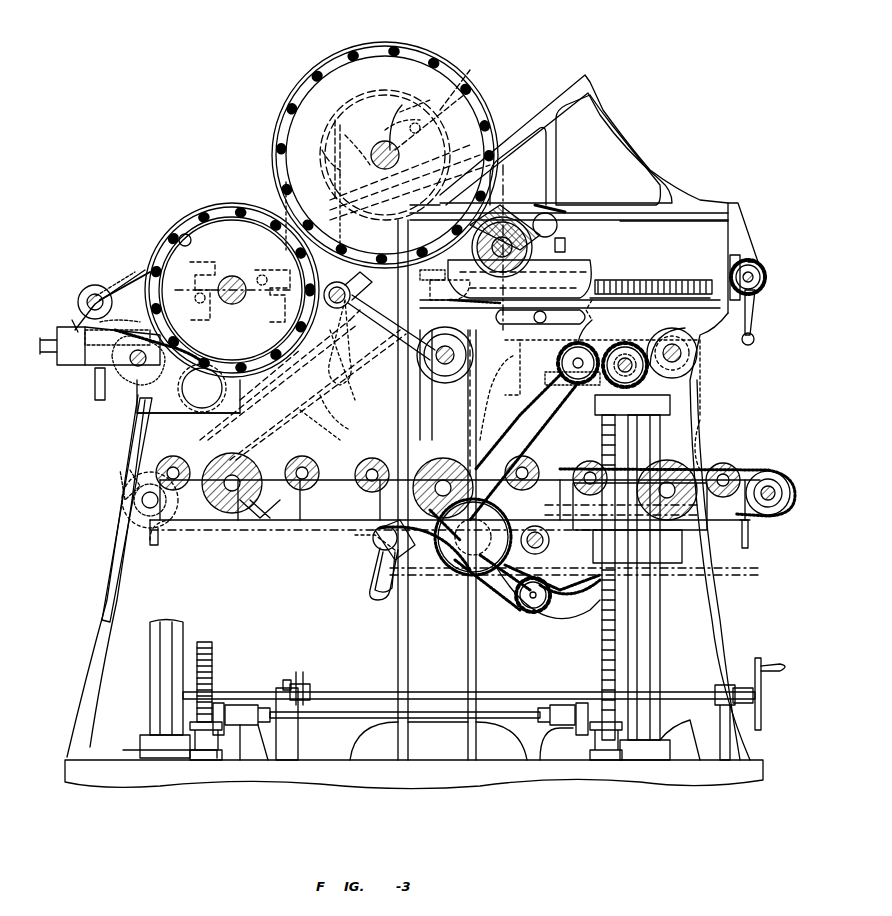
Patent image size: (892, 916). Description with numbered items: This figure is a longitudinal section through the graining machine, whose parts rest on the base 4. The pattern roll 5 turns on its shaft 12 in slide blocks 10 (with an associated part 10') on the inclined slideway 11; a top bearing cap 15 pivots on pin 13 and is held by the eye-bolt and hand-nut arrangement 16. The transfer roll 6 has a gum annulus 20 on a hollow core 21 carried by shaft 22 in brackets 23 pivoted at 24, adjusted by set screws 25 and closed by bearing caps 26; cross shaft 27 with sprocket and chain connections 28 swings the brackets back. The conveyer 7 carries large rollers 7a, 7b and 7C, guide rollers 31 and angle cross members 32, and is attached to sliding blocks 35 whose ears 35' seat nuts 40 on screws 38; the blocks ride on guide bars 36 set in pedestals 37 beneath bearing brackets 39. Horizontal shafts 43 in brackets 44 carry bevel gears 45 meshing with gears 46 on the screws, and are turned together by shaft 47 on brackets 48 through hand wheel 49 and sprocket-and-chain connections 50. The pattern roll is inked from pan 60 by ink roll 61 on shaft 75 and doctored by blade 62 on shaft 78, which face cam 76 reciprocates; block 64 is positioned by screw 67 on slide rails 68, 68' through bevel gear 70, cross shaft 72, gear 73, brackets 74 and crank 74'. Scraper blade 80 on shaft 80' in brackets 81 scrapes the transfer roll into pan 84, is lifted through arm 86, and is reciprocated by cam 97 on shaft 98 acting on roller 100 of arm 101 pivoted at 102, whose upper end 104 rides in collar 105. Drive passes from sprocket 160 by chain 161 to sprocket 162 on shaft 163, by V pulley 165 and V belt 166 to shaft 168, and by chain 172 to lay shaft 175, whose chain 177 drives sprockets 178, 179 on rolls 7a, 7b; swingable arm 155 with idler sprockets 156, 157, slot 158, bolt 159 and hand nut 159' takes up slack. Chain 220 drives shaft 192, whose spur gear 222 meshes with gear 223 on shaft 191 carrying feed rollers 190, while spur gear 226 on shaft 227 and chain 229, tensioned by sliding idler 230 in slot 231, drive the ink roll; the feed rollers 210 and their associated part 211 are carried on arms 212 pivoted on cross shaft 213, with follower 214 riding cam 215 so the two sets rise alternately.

The base 4 is at (503, 165).
The pattern roll 5 is at (330, 56).
The transfer roll 6 is at (206, 208).
The conveyer 7 is at (352, 475).
The large conveyer roller 7a is at (672, 468).
The large conveyer roller 7b is at (440, 462).
The platen or backing roll 7C is at (240, 458).
The slide block 10 is at (428, 120).
The cylinder segment 10' is at (460, 81).
The inclined slideway 11 is at (534, 114).
The pattern roll shaft 12 is at (400, 105).
The pivot pin 13 is at (420, 112).
The top bearing member or cap 15 is at (382, 128).
The swingable eye-bolt and hand nut clamping arrangement 16 is at (296, 92).
The annulus of gum material 20 is at (228, 205).
The cylindrical hollow core 21 is at (180, 232).
The transfer roll shaft 22 is at (234, 272).
The movable bracket 23 is at (200, 312).
The pivot 24 is at (202, 388).
The set screw 25 is at (268, 275).
The pivoted bearing cap member 26 is at (248, 268).
The cross shaft 27 is at (145, 370).
The sprocket and chain connections 28 is at (172, 395).
The small roller 31 is at (176, 457).
The angle section cross member 32 is at (152, 545).
The sliding block 35 is at (647, 577).
The ear 35' is at (636, 522).
The upright guide bar 36 is at (660, 603).
The pedestal member 37 is at (680, 728).
The upright screw 38 is at (212, 646).
The overhanging bearing bracket 39 is at (632, 405).
The threaded nut 40 is at (588, 560).
The horizontal shaft 43 is at (350, 760).
The bracket 44 is at (250, 692).
The beveled gear 45 is at (222, 710).
The bevel gear 46 is at (212, 738).
The longitudinally extending shaft 47 is at (362, 693).
The bracket 48 is at (283, 670).
The hand wheel 49 is at (765, 658).
The sprocket and chain connections 50 is at (296, 672).
The ink pan 60 is at (560, 262).
The ink conveyer roll 61 is at (462, 290).
The doctor blade 62 is at (502, 205).
The slide block 64 is at (445, 220).
The screw 67 is at (640, 270).
The slide rail member 68 is at (650, 271).
The slide rail 68' is at (674, 223).
The beveled gear 70 is at (752, 310).
The cross shaft 72 is at (758, 272).
The bevel gear 73 is at (752, 292).
The bracket 74 is at (756, 232).
The crank 74' is at (764, 330).
The ink roll shaft 75 is at (462, 295).
The face cam 76 is at (560, 250).
The supporting shaft 78 is at (556, 215).
The scraper blade 80 is at (125, 262).
The shaft 80' is at (115, 270).
The bracket 81 is at (80, 300).
The receiving tray or pan 84 is at (95, 360).
The arm 86 is at (112, 322).
The cam 97 is at (178, 530).
The shaft 98 is at (135, 505).
The roller 100 is at (130, 482).
The arm 101 is at (108, 417).
The pivot 102 is at (95, 378).
The upper end of arm 104 is at (72, 320).
The collar 105 is at (80, 288).
The swingable arm 155 is at (522, 600).
The idler sprocket 156 is at (528, 550).
The idler sprocket 157 is at (530, 612).
The arcuate slot 158 is at (400, 570).
The clamping bolt 159 is at (358, 563).
The hand nut 159' is at (356, 550).
The sprocket 160 is at (322, 150).
The chain 161 is at (286, 182).
The sprocket 162 is at (300, 378).
The short shaft 163 is at (350, 412).
The adjustable V pulley 165 is at (350, 428).
The V belt 166 is at (432, 410).
The short shaft 168 is at (462, 572).
The chain 172 is at (552, 612).
The lay shaft 175 is at (770, 484).
The horizontally disposed chain 177 is at (765, 470).
The sprocket 178 is at (700, 460).
The sprocket 179 is at (478, 440).
The feed rollers 190 is at (698, 362).
The shaft 191 is at (690, 354).
The shaft 192 is at (636, 355).
The feed rollers 210 is at (475, 380).
The shaft 211 is at (445, 372).
The arm 212 is at (345, 370).
The cross shaft 213 is at (344, 282).
The cam follower 214 is at (350, 395).
The cam 215 is at (300, 396).
The sprocket chain 220 is at (552, 390).
The spur gear 222 is at (640, 340).
The spur gear 223 is at (664, 345).
The spur gear 226 is at (548, 378).
The shaft 227 is at (592, 320).
The chain 229 is at (596, 300).
The sliding idler 230 is at (555, 350).
The slot 231 is at (500, 318).